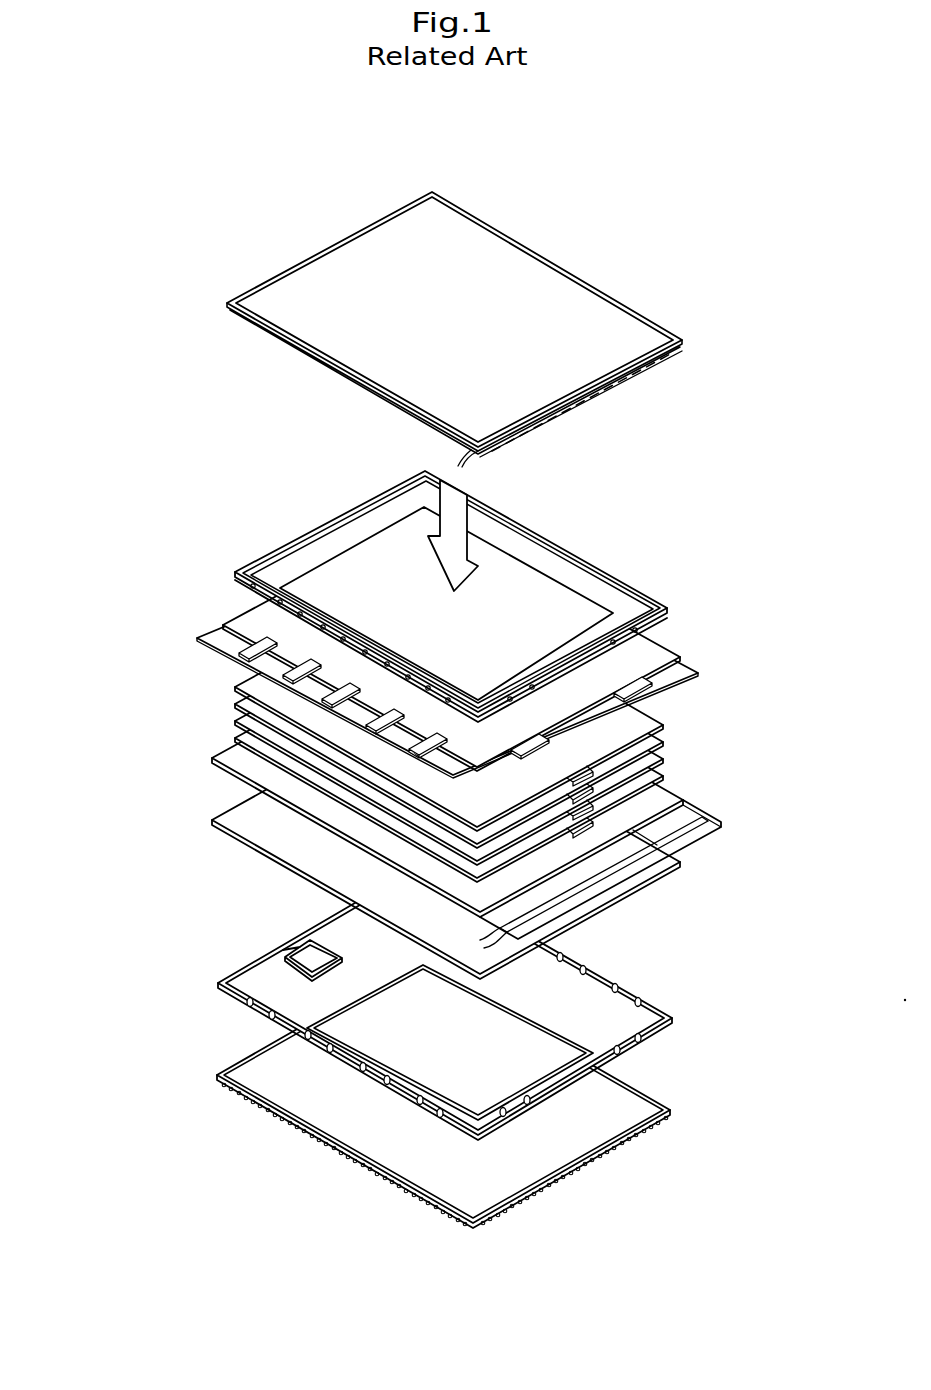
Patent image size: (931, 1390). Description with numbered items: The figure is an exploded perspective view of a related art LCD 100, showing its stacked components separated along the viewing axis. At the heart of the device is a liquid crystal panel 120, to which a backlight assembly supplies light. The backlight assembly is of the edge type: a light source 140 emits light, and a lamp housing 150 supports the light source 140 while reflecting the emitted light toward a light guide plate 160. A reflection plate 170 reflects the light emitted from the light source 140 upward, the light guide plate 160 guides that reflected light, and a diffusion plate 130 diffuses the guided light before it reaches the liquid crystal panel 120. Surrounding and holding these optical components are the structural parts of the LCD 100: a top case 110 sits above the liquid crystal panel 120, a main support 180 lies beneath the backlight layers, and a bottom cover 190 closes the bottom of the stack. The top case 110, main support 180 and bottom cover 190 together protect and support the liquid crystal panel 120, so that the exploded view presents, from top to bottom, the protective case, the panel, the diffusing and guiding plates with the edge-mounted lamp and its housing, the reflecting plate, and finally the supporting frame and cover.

The LCD 100 is at (548, 215).
The top case 110 is at (668, 608).
The liquid crystal panel 120 is at (657, 652).
The diffusion plate 130 is at (676, 727).
The light source 140 is at (713, 808).
The lamp housing 150 is at (722, 821).
The light guide plate 160 is at (232, 757).
The reflection plate 170 is at (680, 859).
The main support 180 is at (672, 1011).
The bottom cover 190 is at (672, 1112).